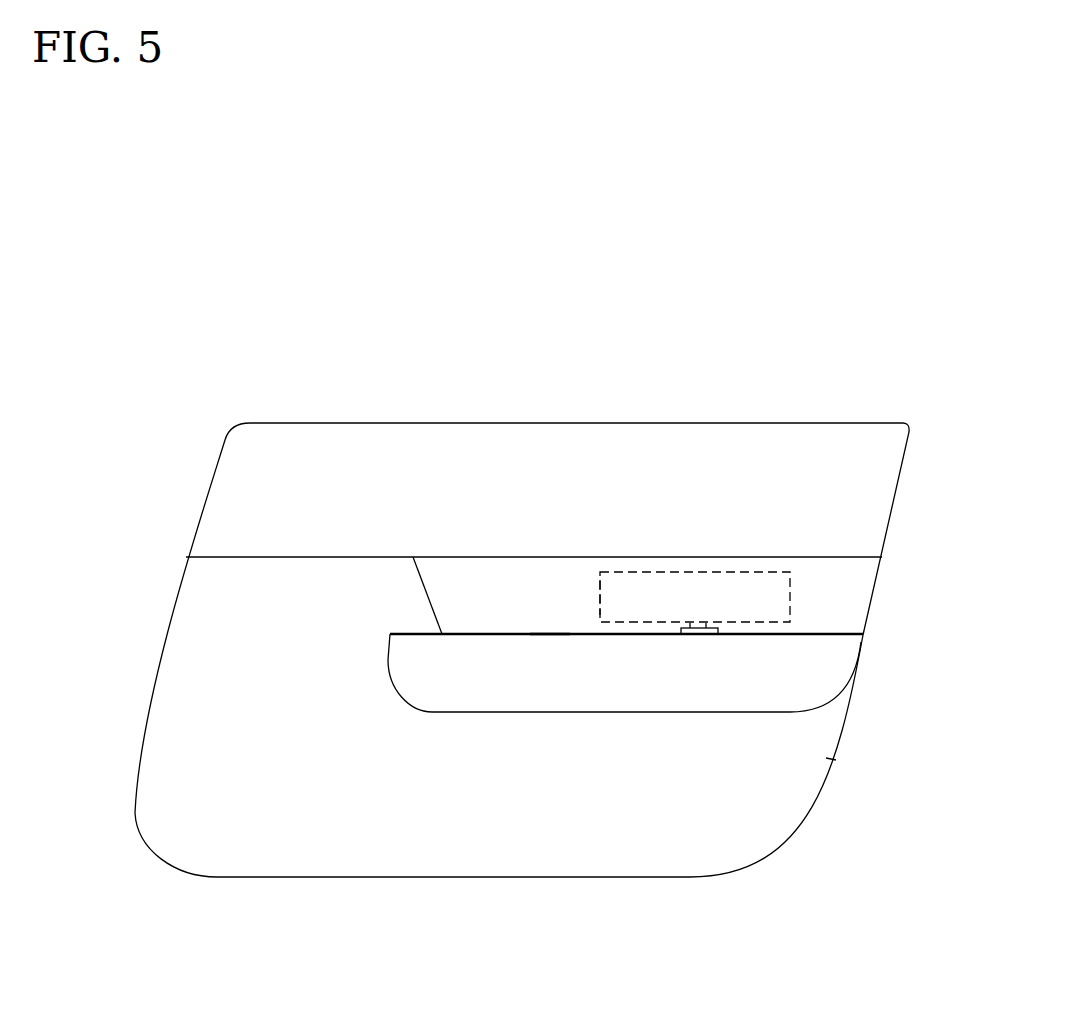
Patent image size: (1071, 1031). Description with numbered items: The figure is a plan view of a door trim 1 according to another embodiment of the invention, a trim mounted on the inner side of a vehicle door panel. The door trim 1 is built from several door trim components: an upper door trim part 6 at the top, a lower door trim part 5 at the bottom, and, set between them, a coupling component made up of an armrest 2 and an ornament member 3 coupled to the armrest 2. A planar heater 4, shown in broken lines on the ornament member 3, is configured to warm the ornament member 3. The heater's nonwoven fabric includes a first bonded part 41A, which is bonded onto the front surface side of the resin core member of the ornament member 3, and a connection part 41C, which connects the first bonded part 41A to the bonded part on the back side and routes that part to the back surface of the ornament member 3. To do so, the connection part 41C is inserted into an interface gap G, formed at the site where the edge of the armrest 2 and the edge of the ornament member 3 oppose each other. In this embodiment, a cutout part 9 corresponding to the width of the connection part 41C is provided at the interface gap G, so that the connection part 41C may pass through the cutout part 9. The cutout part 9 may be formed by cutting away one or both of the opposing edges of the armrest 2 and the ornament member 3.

The door trim 1 is at (914, 394).
The upper door trim part 6 is at (886, 488).
The ornament member 3 is at (868, 598).
The armrest 2 is at (829, 672).
The lower door trim part 5 is at (826, 758).
The planar heater 4 is at (637, 566).
The first bonded part 41A is at (607, 598).
The connection part 41C is at (698, 622).
The cutout part 9 is at (703, 638).
The interface gap G is at (550, 639).